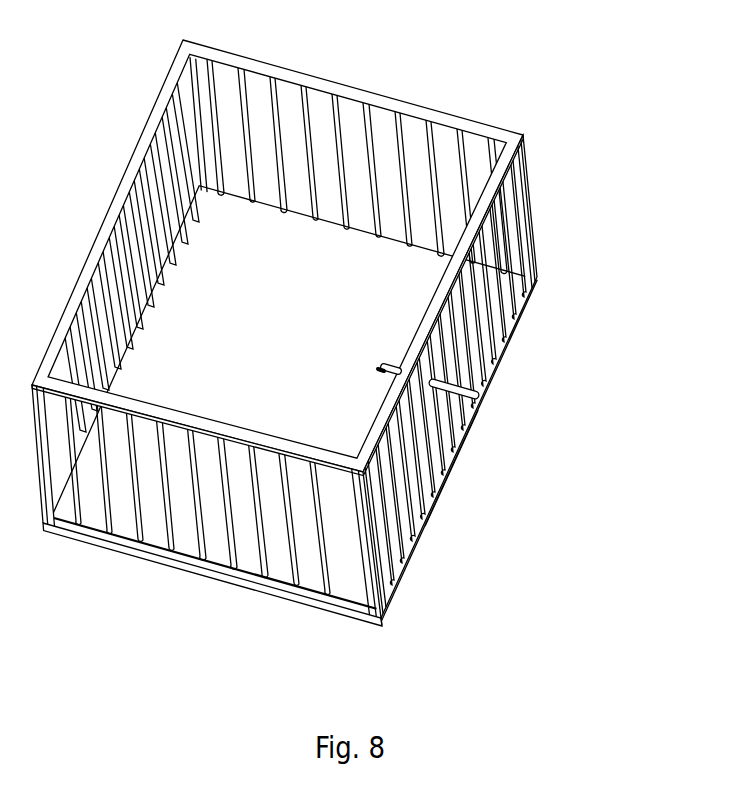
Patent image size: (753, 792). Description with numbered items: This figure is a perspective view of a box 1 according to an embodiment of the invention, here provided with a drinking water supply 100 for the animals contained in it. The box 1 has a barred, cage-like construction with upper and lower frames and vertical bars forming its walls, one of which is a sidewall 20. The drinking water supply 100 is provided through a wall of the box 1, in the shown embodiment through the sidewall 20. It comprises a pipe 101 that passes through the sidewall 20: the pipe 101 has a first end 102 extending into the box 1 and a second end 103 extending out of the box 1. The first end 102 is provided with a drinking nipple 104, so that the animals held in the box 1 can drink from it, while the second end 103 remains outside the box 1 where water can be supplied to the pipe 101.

The box 1 is at (359, 333).
The sidewall 20 is at (529, 160).
The drinking water supply 100 is at (493, 377).
The pipe 101 is at (460, 447).
The first end 102 is at (382, 368).
The second end 103 is at (487, 397).
The drinking nipple 104 is at (380, 372).